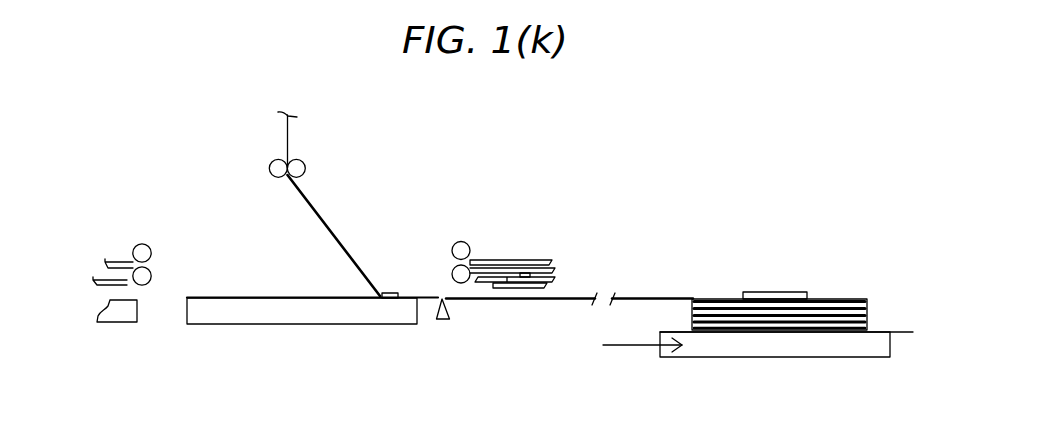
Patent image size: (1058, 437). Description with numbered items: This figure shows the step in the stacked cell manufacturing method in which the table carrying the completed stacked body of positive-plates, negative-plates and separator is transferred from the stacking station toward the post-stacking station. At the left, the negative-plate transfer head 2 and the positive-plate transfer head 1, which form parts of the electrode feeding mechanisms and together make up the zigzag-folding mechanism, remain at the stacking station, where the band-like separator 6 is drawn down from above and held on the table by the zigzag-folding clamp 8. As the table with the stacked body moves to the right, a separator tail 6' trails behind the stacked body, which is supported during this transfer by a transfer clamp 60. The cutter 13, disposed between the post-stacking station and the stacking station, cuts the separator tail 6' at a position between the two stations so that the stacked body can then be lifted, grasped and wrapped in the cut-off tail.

The positive-plate transfer head 1 is at (478, 258).
The negative-plate transfer head 2 is at (123, 257).
The separator 6 is at (324, 204).
The separator tail 6' is at (569, 272).
The zigzag-folding clamp 8 is at (392, 287).
The cutter 13 is at (448, 312).
The transfer clamp 60 is at (782, 292).